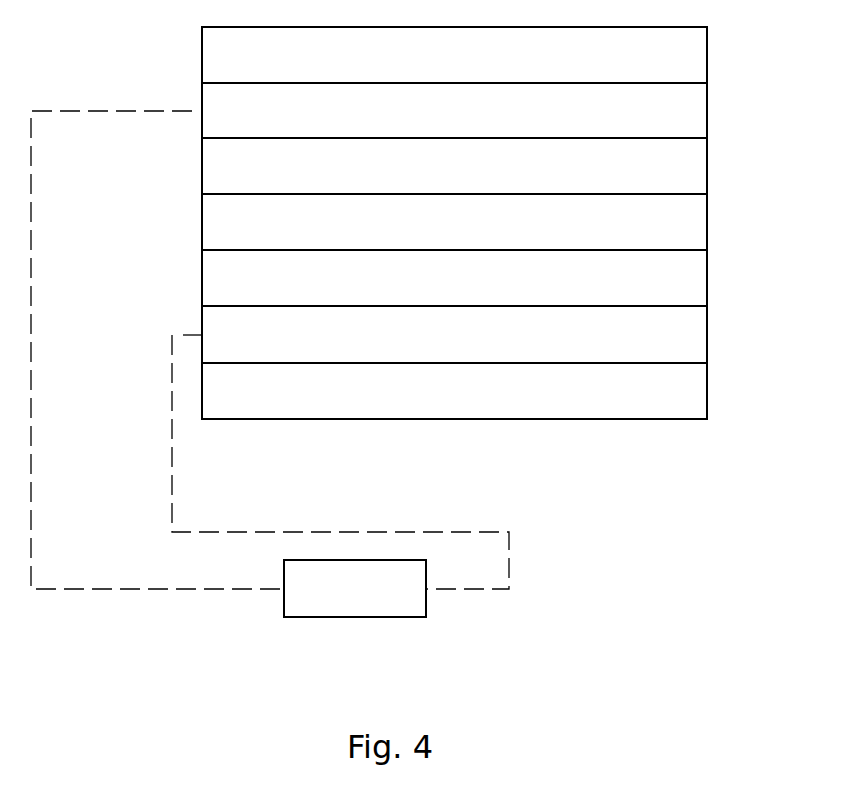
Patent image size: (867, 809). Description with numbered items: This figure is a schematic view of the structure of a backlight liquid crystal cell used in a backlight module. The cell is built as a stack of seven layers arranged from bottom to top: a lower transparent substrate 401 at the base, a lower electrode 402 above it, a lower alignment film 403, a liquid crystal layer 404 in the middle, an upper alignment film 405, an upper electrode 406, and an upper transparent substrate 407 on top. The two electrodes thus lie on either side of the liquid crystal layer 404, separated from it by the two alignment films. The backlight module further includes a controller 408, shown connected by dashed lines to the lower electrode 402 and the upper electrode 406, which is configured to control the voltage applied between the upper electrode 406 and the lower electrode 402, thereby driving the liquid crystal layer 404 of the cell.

The lower transparent substrate 401 is at (707, 392).
The lower electrode 402 is at (707, 335).
The lower alignment film 403 is at (707, 278).
The liquid crystal layer 404 is at (707, 222).
The upper alignment film 405 is at (707, 166).
The upper electrode 406 is at (707, 111).
The upper transparent substrate 407 is at (707, 54).
The controller 408 is at (340, 617).